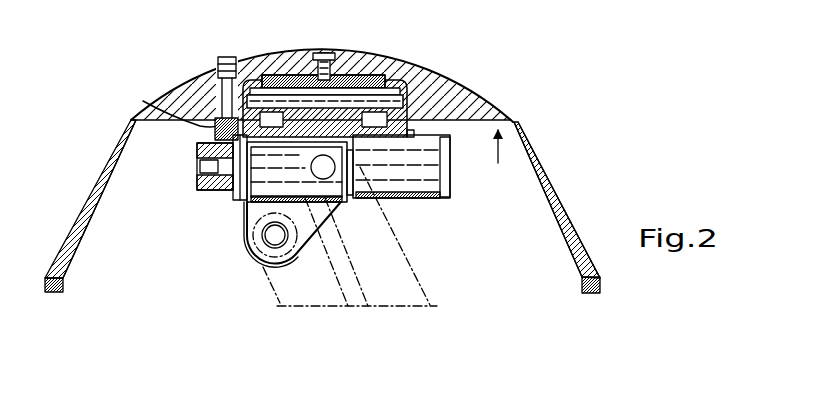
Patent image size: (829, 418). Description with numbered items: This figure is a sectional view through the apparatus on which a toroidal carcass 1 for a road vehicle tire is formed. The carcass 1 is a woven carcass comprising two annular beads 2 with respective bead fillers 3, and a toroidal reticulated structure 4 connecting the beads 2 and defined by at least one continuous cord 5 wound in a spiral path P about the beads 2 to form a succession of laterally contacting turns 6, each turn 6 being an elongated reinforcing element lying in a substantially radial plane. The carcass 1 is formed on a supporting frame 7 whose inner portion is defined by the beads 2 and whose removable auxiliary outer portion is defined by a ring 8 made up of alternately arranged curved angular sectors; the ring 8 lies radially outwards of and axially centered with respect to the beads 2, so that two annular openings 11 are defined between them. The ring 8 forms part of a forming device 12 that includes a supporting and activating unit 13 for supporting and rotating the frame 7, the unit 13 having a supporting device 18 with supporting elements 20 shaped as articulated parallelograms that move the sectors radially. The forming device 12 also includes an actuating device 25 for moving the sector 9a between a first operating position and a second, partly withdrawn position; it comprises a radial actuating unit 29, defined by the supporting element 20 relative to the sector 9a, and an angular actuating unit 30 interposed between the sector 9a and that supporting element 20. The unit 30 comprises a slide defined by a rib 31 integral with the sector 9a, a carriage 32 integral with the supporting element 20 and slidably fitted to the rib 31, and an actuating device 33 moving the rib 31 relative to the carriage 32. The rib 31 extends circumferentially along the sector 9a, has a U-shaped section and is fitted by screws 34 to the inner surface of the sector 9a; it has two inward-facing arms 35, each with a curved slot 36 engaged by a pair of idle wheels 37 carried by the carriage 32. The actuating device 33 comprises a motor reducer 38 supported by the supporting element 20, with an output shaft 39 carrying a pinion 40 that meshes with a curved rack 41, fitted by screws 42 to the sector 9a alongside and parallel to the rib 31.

The toroidal carcass 1 is at (548, 140).
The annular beads 2 is at (602, 283).
The bead fillers 3 is at (583, 245).
The toroidal reticulated structure 4 is at (92, 176).
The continuous cord 5 is at (107, 185).
The turns 6 is at (537, 176).
The supporting frame 7 is at (573, 217).
The ring 8 is at (502, 162).
The sector 9a is at (483, 80).
The annular openings 11 is at (547, 183).
The forming device 12 is at (227, 262).
The supporting and activating unit 13 is at (416, 250).
The supporting device 18 is at (257, 278).
The supporting elements 20 is at (349, 252).
The actuating device 25 is at (440, 205).
The radial actuating unit 29 is at (420, 284).
The angular actuating unit 30 is at (240, 205).
The rib 31 is at (358, 95).
The carriage 32 is at (445, 73).
The actuating device 33 is at (457, 200).
The screws 34 is at (324, 53).
The inward-facing arms 35 is at (233, 195).
The curved slot 36 is at (405, 128).
The idle wheels 37 is at (268, 75).
The motor reducer 38 is at (447, 147).
The output shaft 39 is at (197, 165).
The pinion 40 is at (197, 150).
The curved rack 41 is at (143, 101).
The screws 42 is at (227, 55).
The spiral path P is at (524, 130).